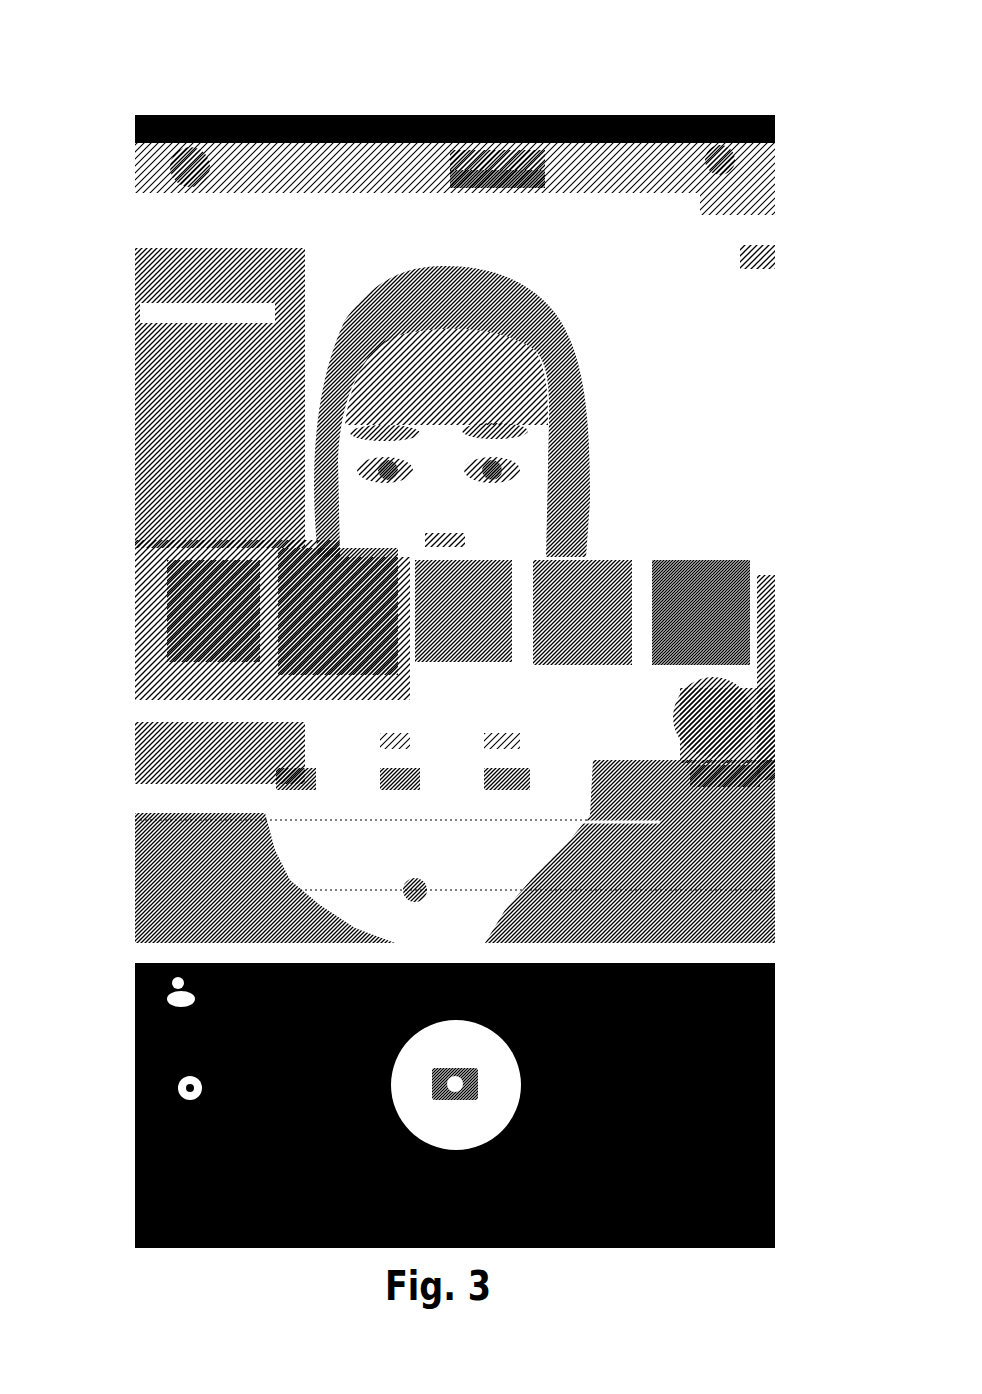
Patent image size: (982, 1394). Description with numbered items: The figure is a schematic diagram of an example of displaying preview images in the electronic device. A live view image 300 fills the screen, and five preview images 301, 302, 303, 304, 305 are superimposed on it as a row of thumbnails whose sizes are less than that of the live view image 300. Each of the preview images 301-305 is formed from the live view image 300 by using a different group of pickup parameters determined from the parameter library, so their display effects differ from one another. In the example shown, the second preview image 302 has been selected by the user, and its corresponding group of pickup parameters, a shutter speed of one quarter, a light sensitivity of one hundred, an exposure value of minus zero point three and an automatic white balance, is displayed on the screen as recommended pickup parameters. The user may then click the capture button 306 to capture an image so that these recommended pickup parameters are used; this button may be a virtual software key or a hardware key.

The live view image 300 is at (627, 295).
The preview image 301 is at (152, 575).
The second preview image 302 is at (240, 557).
The preview image 303 is at (470, 545).
The preview image 304 is at (570, 557).
The preview image 305 is at (750, 562).
The capture button 306 is at (512, 1053).